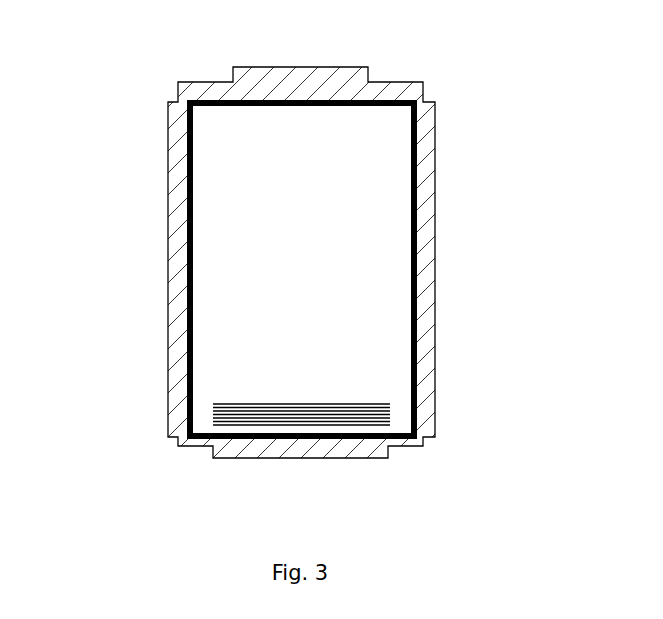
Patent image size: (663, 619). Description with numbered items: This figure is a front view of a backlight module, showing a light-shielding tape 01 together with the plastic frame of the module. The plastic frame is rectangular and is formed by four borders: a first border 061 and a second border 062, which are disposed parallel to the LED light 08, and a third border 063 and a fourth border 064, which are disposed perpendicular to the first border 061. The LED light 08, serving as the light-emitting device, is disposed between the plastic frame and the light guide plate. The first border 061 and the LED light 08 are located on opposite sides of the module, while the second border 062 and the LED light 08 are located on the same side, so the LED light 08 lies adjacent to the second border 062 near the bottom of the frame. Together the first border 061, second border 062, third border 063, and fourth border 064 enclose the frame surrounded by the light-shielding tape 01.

The light-shielding tape 01 is at (425, 194).
The first border 061 is at (302, 100).
The second border 062 is at (302, 439).
The third border 063 is at (183, 266).
The fourth border 064 is at (415, 267).
The LED light 08 is at (390, 413).